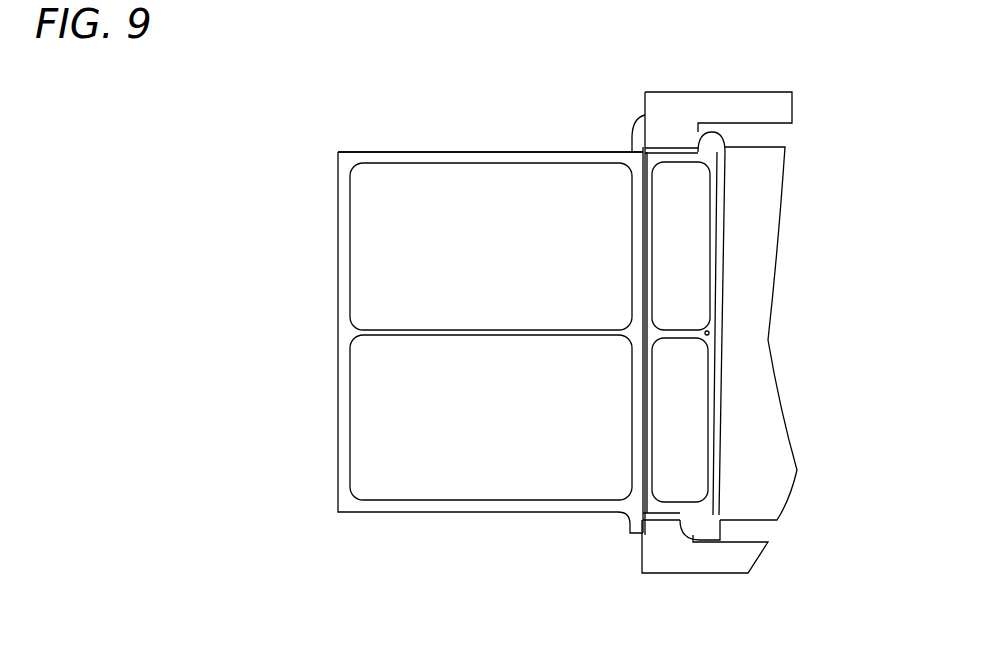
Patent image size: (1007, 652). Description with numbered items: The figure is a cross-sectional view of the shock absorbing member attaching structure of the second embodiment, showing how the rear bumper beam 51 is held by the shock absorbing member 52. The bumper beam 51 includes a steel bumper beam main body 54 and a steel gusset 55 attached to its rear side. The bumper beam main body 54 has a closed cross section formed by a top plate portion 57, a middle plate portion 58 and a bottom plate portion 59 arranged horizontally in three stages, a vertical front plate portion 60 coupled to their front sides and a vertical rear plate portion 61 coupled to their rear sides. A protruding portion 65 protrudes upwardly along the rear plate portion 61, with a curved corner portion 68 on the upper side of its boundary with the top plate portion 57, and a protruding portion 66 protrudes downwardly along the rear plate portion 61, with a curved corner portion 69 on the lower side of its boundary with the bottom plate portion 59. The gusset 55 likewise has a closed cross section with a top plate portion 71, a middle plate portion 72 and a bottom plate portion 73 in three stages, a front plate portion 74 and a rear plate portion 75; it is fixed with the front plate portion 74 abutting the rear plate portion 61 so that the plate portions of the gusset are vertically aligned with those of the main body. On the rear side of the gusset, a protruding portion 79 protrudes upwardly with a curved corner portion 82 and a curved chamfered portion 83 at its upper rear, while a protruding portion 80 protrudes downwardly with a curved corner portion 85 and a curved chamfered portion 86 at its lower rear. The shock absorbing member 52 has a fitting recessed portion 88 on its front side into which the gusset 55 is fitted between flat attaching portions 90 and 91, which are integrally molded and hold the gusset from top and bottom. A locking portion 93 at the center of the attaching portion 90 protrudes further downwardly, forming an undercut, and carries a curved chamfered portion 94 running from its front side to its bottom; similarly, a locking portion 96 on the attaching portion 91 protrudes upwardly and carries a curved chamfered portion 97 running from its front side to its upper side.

The rear bumper beam 51 is at (326, 152).
The shock absorbing member 52 is at (800, 92).
The bumper beam main body 54 is at (337, 213).
The gusset 55 is at (722, 277).
The top plate portion 57 is at (463, 152).
The middle plate portion 58 is at (500, 330).
The bottom plate portion 59 is at (475, 500).
The front plate portion 60 is at (338, 245).
The rear plate portion 61 is at (632, 270).
The protruding portion 65 is at (640, 130).
The protruding portion 66 is at (632, 532).
The curved corner portion 68 is at (636, 147).
The curved corner portion 69 is at (628, 522).
The top plate portion 71 is at (663, 145).
The middle plate portion 72 is at (710, 345).
The bottom plate portion 73 is at (655, 545).
The front plate portion 74 is at (652, 263).
The rear plate portion 75 is at (722, 215).
The protruding portion 79 is at (712, 134).
The protruding portion 80 is at (750, 556).
The curved corner portion 82 is at (680, 142).
The curved chamfered portion 83 is at (728, 128).
The curved corner portion 85 is at (688, 545).
The curved chamfered portion 86 is at (722, 537).
The fitting recessed portion 88 is at (712, 332).
The attaching portion 90 is at (642, 90).
The attaching portion 91 is at (638, 572).
The locking portion 93 is at (727, 150).
The curved chamfered portion 94 is at (642, 147).
The locking portion 96 is at (725, 510).
The curved chamfered portion 97 is at (630, 520).